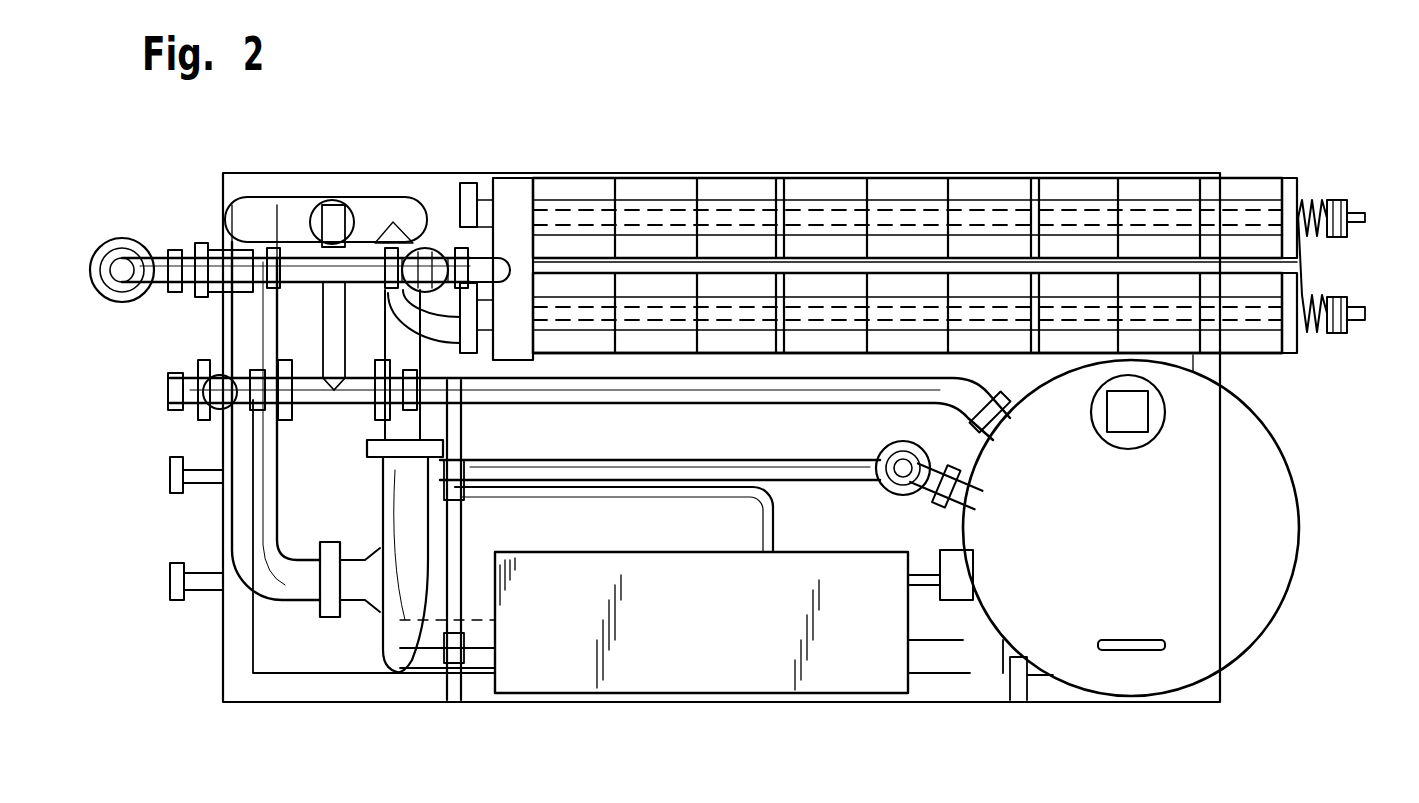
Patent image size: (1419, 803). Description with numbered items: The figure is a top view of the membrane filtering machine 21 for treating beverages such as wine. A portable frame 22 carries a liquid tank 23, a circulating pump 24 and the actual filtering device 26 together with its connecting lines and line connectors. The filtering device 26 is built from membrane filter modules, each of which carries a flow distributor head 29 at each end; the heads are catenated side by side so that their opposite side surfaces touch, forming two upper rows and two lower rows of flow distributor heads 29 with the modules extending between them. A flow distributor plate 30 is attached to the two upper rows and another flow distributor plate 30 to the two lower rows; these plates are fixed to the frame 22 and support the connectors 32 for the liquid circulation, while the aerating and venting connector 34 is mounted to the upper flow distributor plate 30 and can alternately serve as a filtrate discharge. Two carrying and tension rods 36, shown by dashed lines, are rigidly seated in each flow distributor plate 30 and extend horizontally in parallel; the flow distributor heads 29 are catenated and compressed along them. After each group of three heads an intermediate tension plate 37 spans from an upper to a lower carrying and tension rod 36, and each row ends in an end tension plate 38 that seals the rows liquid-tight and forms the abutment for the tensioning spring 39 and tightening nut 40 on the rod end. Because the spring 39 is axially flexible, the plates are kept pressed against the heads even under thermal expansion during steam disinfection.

The membrane filtering machine 21 is at (160, 434).
The portable frame 22 is at (316, 686).
The liquid tank 23 is at (1142, 540).
The circulating pump 24 is at (633, 538).
The filtering device 26 is at (826, 360).
The flow distributor head 29 is at (623, 190).
The flow distributor plate 30 is at (513, 190).
The connector 32 is at (470, 230).
The aerating and venting connector 34 is at (477, 222).
The carrying and tension rod 36 is at (663, 213).
The intermediate tension plate 37 is at (793, 187).
The end tension plate 38 is at (1285, 192).
The tensioning device or spring 39 is at (1322, 188).
The tightening nut 40 is at (1337, 295).